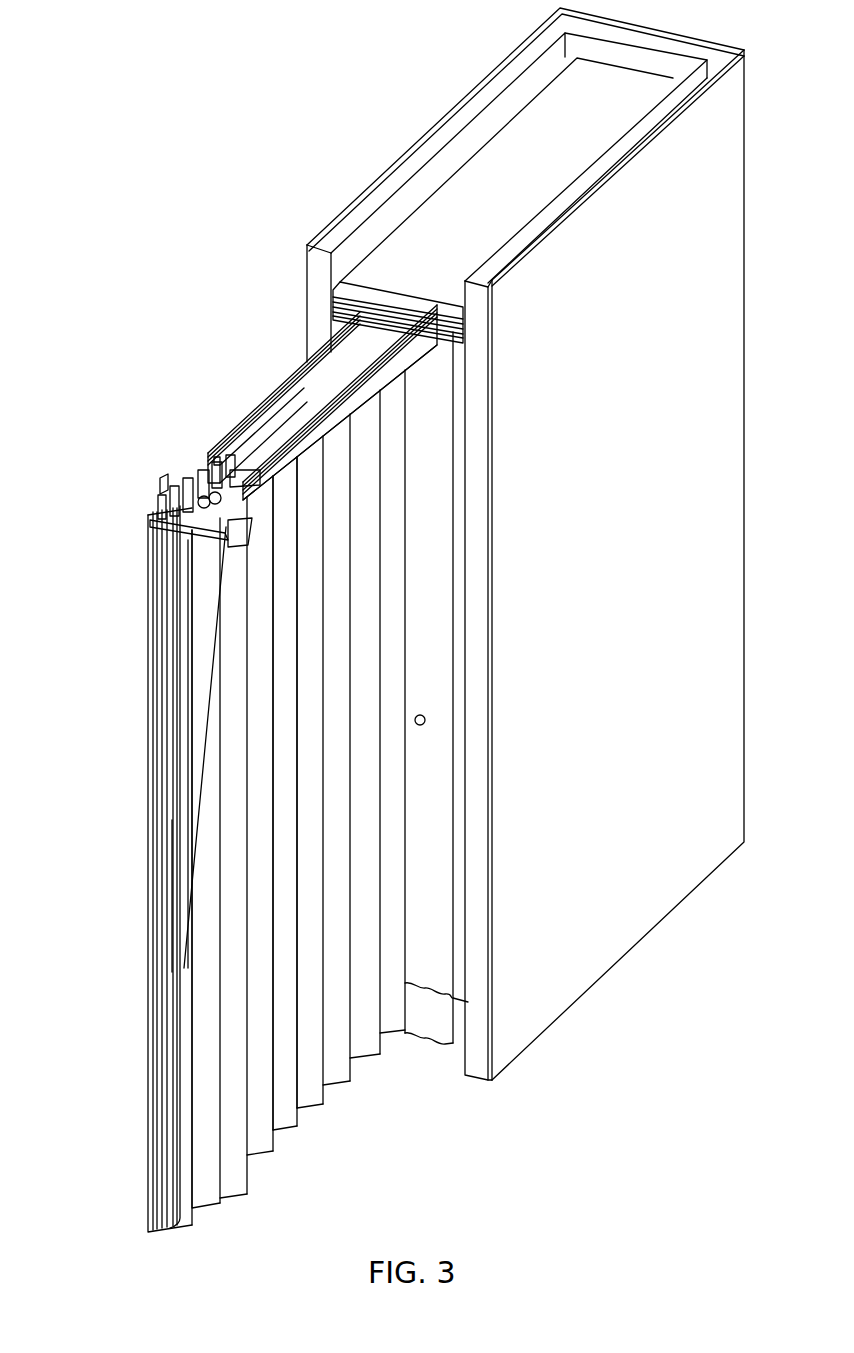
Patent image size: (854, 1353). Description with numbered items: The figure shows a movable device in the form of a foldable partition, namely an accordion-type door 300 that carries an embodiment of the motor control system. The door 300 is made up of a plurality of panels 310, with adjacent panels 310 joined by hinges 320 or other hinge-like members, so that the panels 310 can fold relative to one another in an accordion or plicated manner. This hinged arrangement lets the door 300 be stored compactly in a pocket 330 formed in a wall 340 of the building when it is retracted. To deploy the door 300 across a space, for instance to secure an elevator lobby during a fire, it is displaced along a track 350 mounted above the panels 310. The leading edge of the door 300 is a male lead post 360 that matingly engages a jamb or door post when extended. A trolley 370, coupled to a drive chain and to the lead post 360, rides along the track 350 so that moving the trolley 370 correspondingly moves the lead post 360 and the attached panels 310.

The accordion-type door 300 is at (270, 768).
The panels 310 is at (297, 1128).
The hinges 320 is at (297, 1113).
The pocket 330 is at (435, 1046).
The wall 340 is at (307, 292).
The track 350 is at (272, 393).
The male lead post 360 is at (160, 768).
The trolley 370 is at (218, 540).